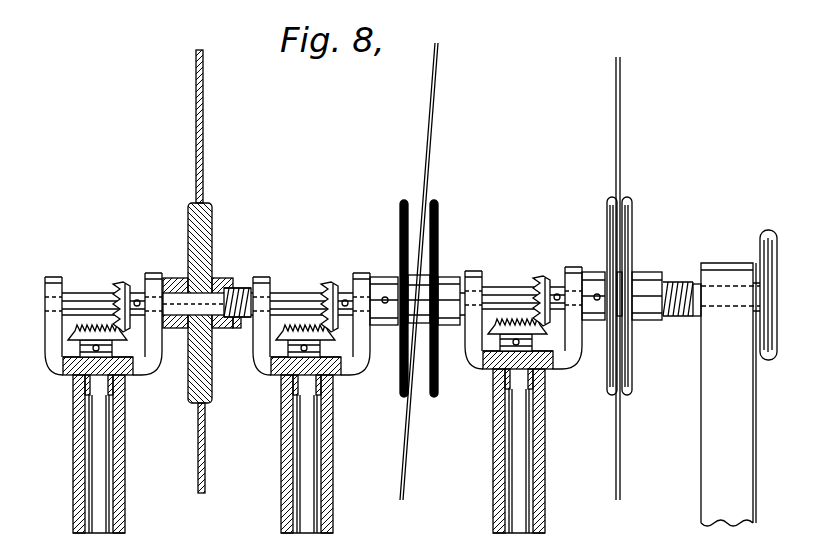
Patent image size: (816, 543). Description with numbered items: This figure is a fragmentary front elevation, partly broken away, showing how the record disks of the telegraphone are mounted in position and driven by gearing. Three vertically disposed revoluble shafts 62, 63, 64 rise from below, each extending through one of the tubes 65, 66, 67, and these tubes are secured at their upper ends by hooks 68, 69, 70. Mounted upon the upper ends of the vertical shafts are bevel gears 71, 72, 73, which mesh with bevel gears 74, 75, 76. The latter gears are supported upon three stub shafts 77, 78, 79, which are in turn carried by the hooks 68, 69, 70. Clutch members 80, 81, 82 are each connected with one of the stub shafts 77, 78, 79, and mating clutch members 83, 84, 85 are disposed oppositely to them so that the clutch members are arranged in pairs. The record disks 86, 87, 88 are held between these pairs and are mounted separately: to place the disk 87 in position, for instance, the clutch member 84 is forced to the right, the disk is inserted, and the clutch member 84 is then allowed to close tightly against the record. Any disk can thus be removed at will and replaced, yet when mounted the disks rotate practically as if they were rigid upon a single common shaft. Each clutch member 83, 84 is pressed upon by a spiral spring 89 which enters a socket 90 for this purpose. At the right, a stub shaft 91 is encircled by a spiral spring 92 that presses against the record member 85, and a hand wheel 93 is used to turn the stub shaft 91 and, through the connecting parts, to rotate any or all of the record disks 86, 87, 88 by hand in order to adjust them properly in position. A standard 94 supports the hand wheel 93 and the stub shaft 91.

The vertically disposed revoluble shaft 62 is at (90, 448).
The vertically disposed revoluble shaft 63 is at (305, 491).
The vertically disposed revoluble shaft 64 is at (517, 487).
The tube 65 is at (73, 488).
The tube 66 is at (281, 456).
The tube 67 is at (490, 451).
The hook 68 is at (55, 366).
The hook 69 is at (343, 372).
The hook 70 is at (556, 364).
The bevel gear 71 is at (72, 332).
The bevel gear 72 is at (283, 338).
The bevel gear 73 is at (492, 330).
The bevel gear 74 is at (122, 284).
The bevel gear 75 is at (328, 279).
The bevel gear 76 is at (540, 272).
The stub shaft 77 is at (95, 293).
The stub shaft 78 is at (285, 294).
The stub shaft 79 is at (496, 289).
The clutch member 80 is at (188, 238).
The clutch member 81 is at (400, 240).
The clutch member 82 is at (607, 240).
The clutch member 83 is at (212, 226).
The clutch member 84 is at (440, 246).
The clutch member 85 is at (631, 242).
The record disk 86 is at (203, 146).
The record disk 87 is at (430, 140).
The record disk 88 is at (620, 143).
The spiral spring 89 is at (236, 286).
The socket 90 is at (236, 330).
The stub shaft 91 is at (670, 283).
The spiral spring 92 is at (686, 316).
The hand wheel 93 is at (762, 254).
The standard 94 is at (730, 394).